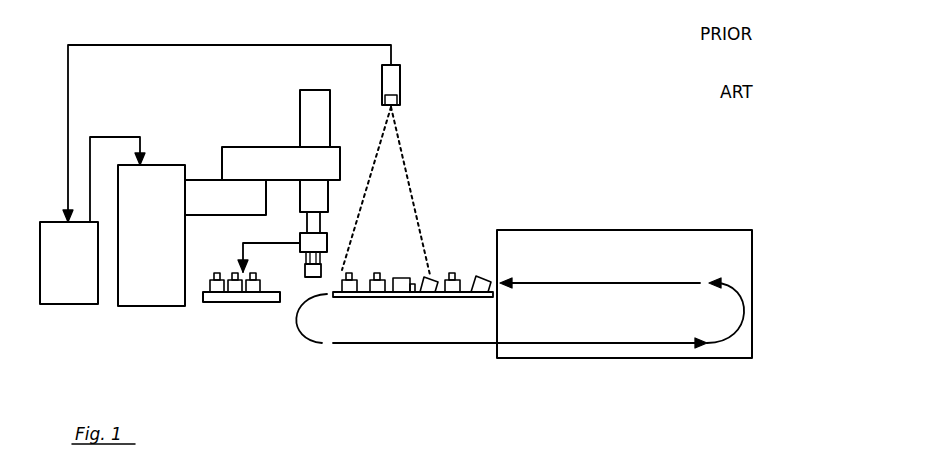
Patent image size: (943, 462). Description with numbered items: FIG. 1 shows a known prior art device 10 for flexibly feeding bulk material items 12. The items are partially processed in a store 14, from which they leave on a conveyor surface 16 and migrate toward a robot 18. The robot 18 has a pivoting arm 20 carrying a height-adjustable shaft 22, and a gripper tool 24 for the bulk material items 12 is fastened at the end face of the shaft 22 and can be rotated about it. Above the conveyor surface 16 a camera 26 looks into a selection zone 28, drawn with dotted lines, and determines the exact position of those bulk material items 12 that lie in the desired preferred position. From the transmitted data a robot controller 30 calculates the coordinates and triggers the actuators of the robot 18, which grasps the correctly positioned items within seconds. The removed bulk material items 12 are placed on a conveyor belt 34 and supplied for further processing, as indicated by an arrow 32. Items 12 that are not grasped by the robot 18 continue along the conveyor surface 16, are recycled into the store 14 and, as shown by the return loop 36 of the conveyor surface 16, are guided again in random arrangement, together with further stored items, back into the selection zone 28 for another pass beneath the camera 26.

The prior art component handling system 10 is at (568, 109).
The bulk material items 12 is at (378, 294).
The store 14 is at (652, 243).
The conveyor surface 16 is at (415, 294).
The robot 18 is at (152, 295).
The pivoting arm 20 is at (270, 157).
The height-adjustable shaft 22 is at (322, 223).
The gripper tool 24 is at (313, 243).
The camera 26 is at (394, 86).
The selection zone 28 is at (392, 173).
The robot controller 30 is at (66, 290).
The arrow 32 is at (372, 265).
The conveyor belt 34 is at (230, 298).
The conveyor return loop 36 is at (313, 342).